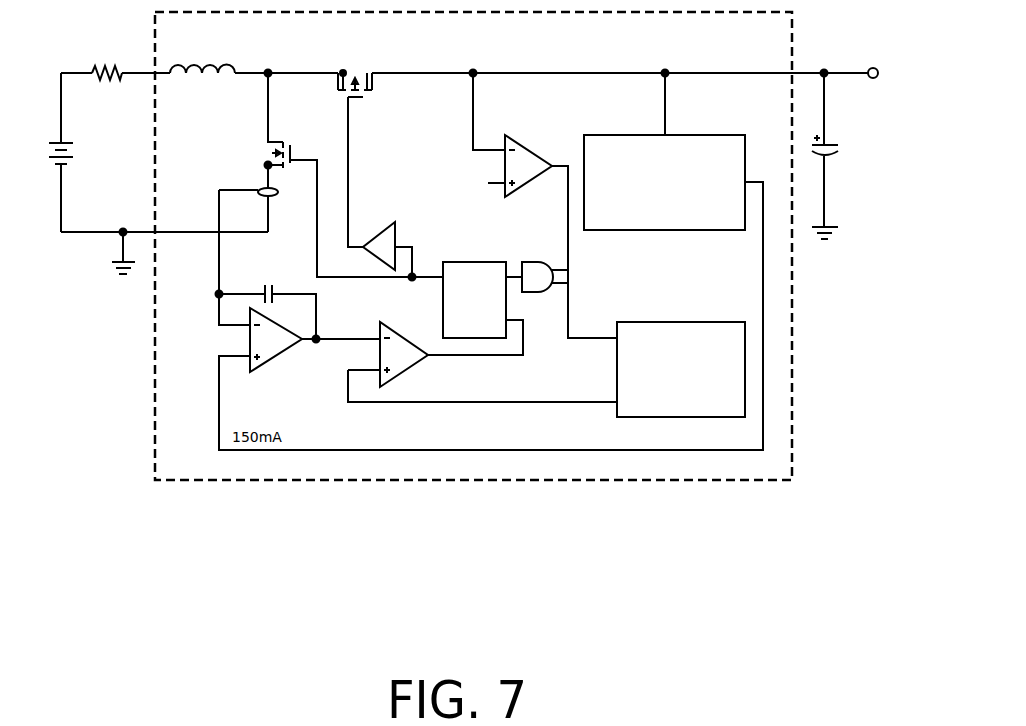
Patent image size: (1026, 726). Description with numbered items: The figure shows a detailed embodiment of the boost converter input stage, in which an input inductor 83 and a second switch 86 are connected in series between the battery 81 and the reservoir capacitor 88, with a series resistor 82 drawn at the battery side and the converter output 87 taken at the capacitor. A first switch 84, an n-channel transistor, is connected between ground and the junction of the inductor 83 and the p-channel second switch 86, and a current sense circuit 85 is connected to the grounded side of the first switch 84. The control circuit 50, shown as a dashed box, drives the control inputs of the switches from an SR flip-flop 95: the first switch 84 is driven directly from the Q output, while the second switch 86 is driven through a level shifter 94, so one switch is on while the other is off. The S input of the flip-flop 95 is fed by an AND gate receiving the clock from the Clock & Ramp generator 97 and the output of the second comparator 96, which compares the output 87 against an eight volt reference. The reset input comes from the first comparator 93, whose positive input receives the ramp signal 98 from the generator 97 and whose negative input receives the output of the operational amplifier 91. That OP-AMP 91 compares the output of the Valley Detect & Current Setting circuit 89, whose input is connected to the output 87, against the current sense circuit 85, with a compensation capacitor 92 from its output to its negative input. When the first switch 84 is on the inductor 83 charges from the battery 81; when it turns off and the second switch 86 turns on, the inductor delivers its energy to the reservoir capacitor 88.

The control circuit 50 is at (198, 463).
The battery 81 is at (73, 153).
The resistor 82 is at (105, 63).
The input inductor 83 is at (205, 62).
The first switch 84 is at (265, 153).
The current sense circuit 85 is at (258, 188).
The second switch 86 is at (355, 72).
The output 87 is at (838, 70).
The reservoir capacitor 88 is at (838, 148).
The Valley Detect & Current Setting circuit 89 is at (697, 133).
The operational amplifier 91 is at (253, 368).
The compensation capacitor 92 is at (265, 283).
The first comparator 93 is at (390, 323).
The level shifter 94 is at (395, 232).
The SR flip-flop 95 is at (473, 262).
The second comparator 96 is at (510, 135).
The Clock & Ramp generator 97 is at (682, 320).
The ramp signal line 98 is at (458, 400).